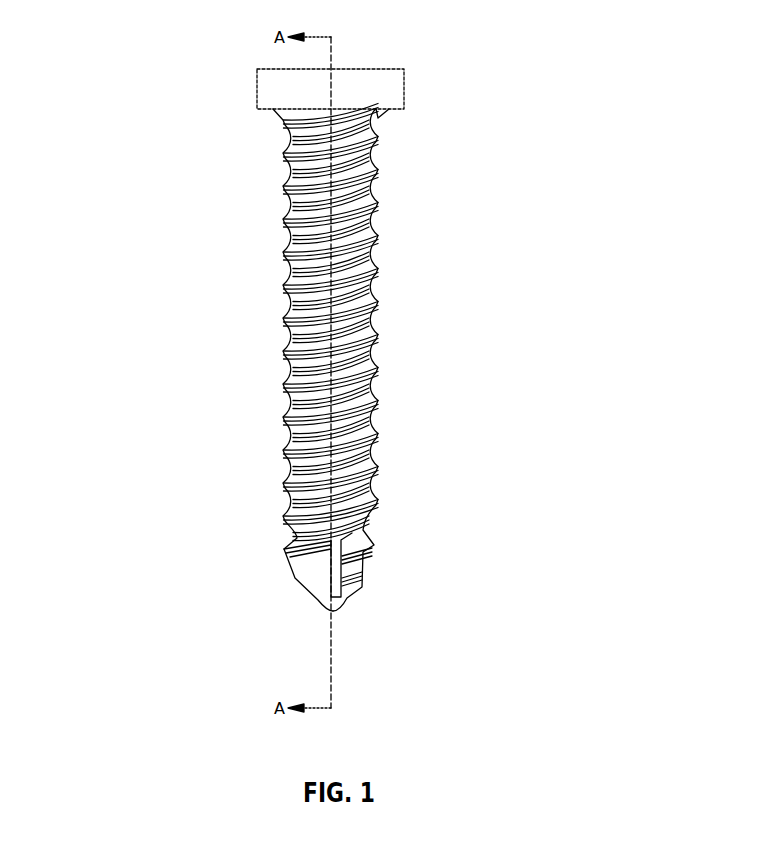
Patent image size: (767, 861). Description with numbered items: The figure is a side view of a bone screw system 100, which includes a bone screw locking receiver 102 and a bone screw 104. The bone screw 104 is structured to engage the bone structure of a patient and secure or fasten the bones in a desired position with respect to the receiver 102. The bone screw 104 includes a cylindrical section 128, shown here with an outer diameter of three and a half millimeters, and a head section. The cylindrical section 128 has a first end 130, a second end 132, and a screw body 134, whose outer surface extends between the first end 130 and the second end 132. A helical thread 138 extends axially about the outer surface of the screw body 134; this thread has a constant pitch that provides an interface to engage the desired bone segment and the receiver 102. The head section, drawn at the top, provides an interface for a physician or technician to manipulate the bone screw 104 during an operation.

The bone screw system 100 is at (630, 180).
The bone screw locking receiver 102 is at (257, 76).
The bone screw 104 is at (297, 400).
The cylindrical section 128 is at (370, 330).
The first end 130 is at (387, 109).
The second end 132 is at (350, 600).
The screw body 134 is at (375, 250).
The helical thread 138 is at (292, 272).